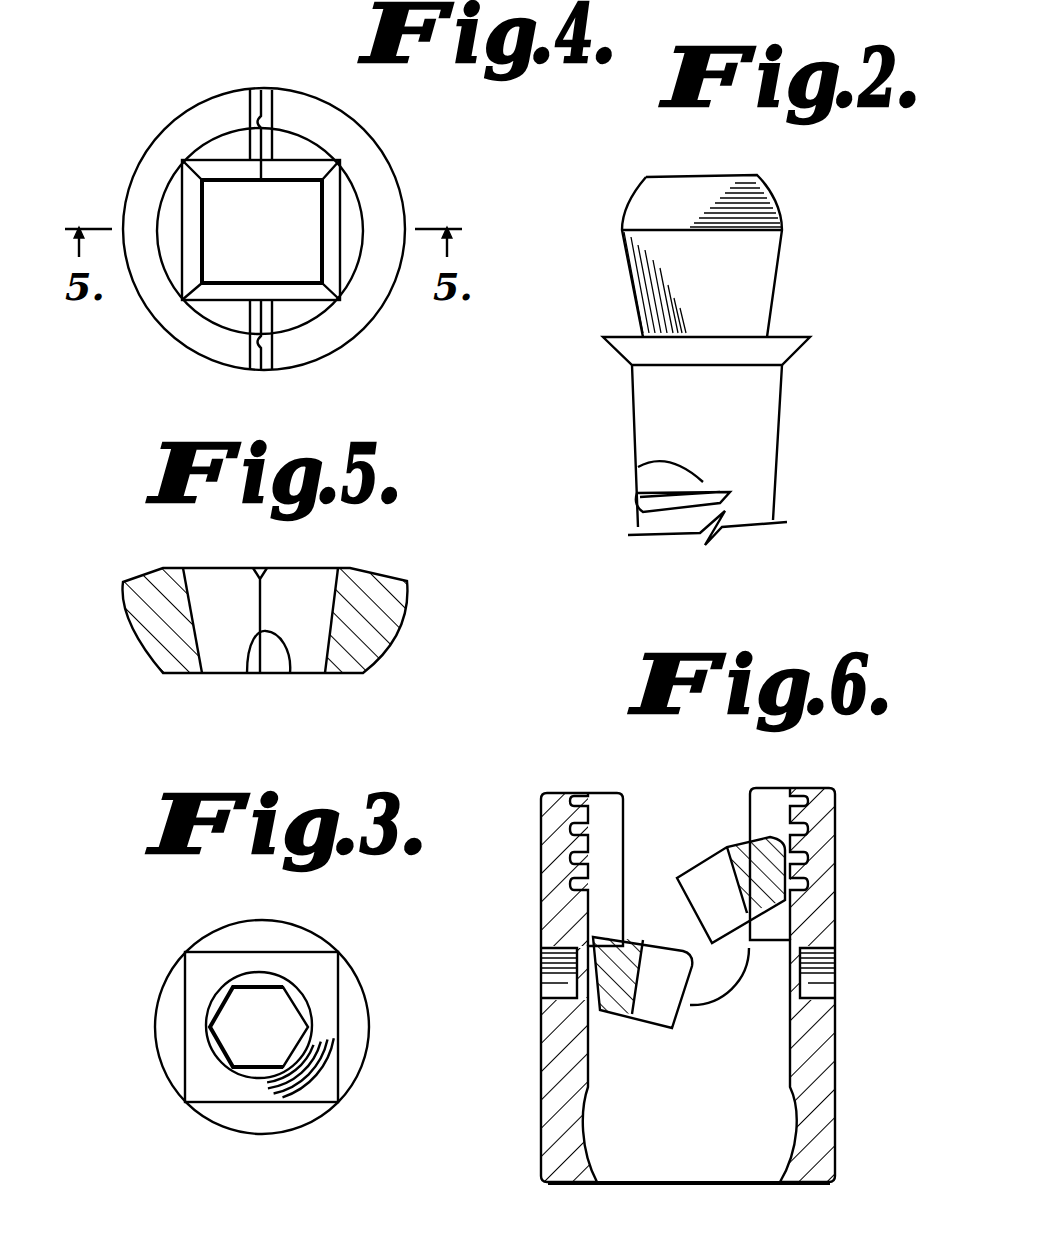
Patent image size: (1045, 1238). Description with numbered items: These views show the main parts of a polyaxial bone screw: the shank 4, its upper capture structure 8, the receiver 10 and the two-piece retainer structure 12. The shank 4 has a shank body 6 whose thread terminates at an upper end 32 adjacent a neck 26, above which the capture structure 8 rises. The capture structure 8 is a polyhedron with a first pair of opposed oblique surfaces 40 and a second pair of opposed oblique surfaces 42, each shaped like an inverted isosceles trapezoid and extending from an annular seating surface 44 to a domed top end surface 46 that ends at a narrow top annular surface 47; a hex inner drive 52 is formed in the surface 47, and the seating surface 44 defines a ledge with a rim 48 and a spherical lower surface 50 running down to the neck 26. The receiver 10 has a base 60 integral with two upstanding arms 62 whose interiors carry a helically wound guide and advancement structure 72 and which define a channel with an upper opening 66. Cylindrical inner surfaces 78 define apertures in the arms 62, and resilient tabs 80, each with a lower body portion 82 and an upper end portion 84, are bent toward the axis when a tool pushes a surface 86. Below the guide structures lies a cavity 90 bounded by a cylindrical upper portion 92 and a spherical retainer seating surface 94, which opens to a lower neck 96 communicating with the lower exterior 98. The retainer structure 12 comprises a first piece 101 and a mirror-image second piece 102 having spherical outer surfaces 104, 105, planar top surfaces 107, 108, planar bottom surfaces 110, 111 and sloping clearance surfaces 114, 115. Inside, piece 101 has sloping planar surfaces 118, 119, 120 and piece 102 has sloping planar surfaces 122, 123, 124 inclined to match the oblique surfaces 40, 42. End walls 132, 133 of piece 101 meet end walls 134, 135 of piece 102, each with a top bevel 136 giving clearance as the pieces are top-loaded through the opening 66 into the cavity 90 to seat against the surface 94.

In FIG. 2, the shank 4 is at (782, 420).
In FIG. 2, the shank body 6 is at (645, 528).
In FIG. 3, the shank upper portion or capture structure 8 is at (345, 985).
In FIG. 2, the shank upper portion or capture structure 8 is at (777, 295).
In FIG. 6, the receiver 10 is at (835, 820).
In FIG. 4, the retainer structure 12 is at (156, 104).
In FIG. 5, the retainer structure 12 is at (122, 638).
In FIG. 2, the neck 26 is at (783, 373).
In FIG. 2, the upper end or top of the body 32 is at (660, 467).
In FIG. 3, the first pair of opposed oblique surfaces 40 is at (290, 945).
In FIG. 2, the first pair of opposed oblique surfaces 40 is at (717, 283).
In FIG. 3, the second pair of opposed oblique surfaces 42 is at (186, 1050).
In FIG. 2, the second pair of opposed oblique surfaces 42 is at (782, 253).
In FIG. 3, the annular seating surface 44 is at (270, 1115).
In FIG. 2, the annular seating surface 44 is at (783, 335).
In FIG. 3, the top end surface 46 is at (200, 975).
In FIG. 2, the top end surface 46 is at (773, 197).
In FIG. 3, the top annular surface 47 is at (215, 1040).
In FIG. 2, the top annular surface 47 is at (757, 173).
In FIG. 3, the rim 48 is at (320, 1115).
In FIG. 2, the rim 48 is at (603, 332).
In FIG. 2, the spherical lower surface 50 is at (622, 350).
In FIG. 3, the inner drive 52 is at (237, 985).
In FIG. 6, the base 60 is at (548, 1160).
In FIG. 6, the arms 62 is at (541, 866).
In FIG. 6, the upper opening 66 is at (735, 776).
In FIG. 6, the guide and advancement structure 72 is at (752, 808).
In FIG. 6, the cylindrical inner surfaces 78 is at (578, 996).
In FIG. 6, the tabs 80 is at (553, 950).
In FIG. 6, the lower end or body portion 82 is at (792, 1000).
In FIG. 6, the upper end portion 84 is at (752, 948).
In FIG. 6, the surface of the tab 86 is at (560, 980).
In FIG. 6, the cavity 90 is at (800, 1135).
In FIG. 6, the cylindrical upper portion 92 is at (590, 1072).
In FIG. 6, the retainer seating surface 94 is at (588, 1118).
In FIG. 6, the lower neck 96 is at (606, 1181).
In FIG. 6, the lower exterior 98 is at (818, 1185).
In FIG. 4, the first piece 101 is at (150, 320).
In FIG. 5, the first piece 101 is at (123, 582).
In FIG. 6, the first piece 101 is at (622, 933).
In FIG. 4, the second piece 102 is at (368, 327).
In FIG. 5, the second piece 102 is at (407, 600).
In FIG. 6, the second piece 102 is at (732, 838).
In FIG. 5, the spherical outer surface 104 is at (148, 660).
In FIG. 5, the spherical outer surface 105 is at (395, 632).
In FIG. 4, the planar top surface 107 is at (172, 203).
In FIG. 5, the planar top surface 107 is at (183, 568).
In FIG. 4, the planar top surface 108 is at (347, 200).
In FIG. 5, the planar top surface 108 is at (350, 568).
In FIG. 5, the planar bottom surface 110 is at (177, 673).
In FIG. 6, the planar bottom surface 110 is at (618, 1018).
In FIG. 5, the planar bottom surface 111 is at (363, 673).
In FIG. 6, the planar bottom surface 111 is at (745, 940).
In FIG. 4, the sloping planar surface 114 is at (240, 320).
In FIG. 5, the sloping planar surface 114 is at (168, 568).
In FIG. 4, the sloping planar surface 115 is at (330, 343).
In FIG. 5, the sloping planar surface 115 is at (400, 580).
In FIG. 4, the sloping inner planar surface 118 is at (187, 333).
In FIG. 4, the sloping inner planar surface 119 is at (195, 230).
In FIG. 4, the sloping inner planar surface 120 is at (213, 170).
In FIG. 5, the sloping inner planar surface 120 is at (215, 572).
In FIG. 4, the inner sloping planar surface 122 is at (293, 287).
In FIG. 4, the inner sloping planar surface 123 is at (327, 230).
In FIG. 4, the inner sloping planar surface 124 is at (303, 173).
In FIG. 5, the inner sloping planar surface 124 is at (305, 570).
In FIG. 4, the end wall 132 is at (258, 368).
In FIG. 4, the end wall 133 is at (262, 92).
In FIG. 5, the end wall 133 is at (290, 673).
In FIG. 4, the end wall 134 is at (274, 318).
In FIG. 4, the end wall 135 is at (264, 148).
In FIG. 5, the end wall 135 is at (247, 673).
In FIG. 4, the top bevel 136 is at (249, 92).
In FIG. 5, the top bevel 136 is at (258, 572).